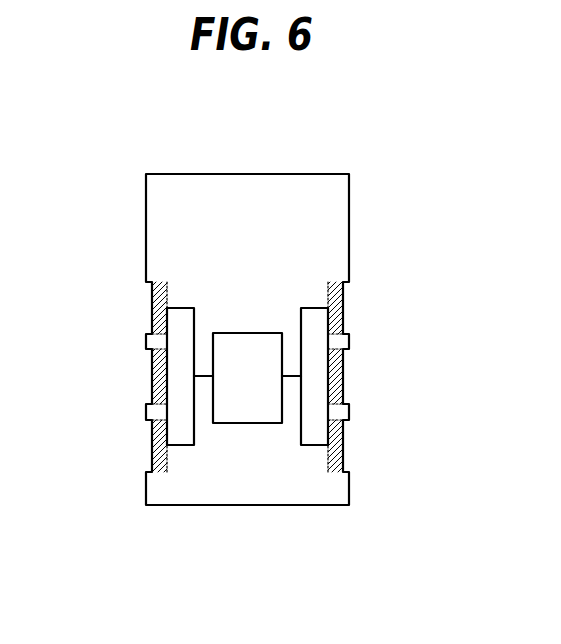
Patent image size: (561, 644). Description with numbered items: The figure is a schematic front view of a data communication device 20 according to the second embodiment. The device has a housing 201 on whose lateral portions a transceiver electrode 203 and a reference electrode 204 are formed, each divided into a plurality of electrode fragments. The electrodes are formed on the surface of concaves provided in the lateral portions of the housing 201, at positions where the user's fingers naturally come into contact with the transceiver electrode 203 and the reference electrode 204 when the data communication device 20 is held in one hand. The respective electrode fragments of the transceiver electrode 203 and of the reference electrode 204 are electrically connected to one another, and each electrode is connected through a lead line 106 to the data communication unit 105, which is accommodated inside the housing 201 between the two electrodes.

The data communication device 20 is at (334, 136).
The housing 201 is at (349, 225).
The transceiver electrode 203 is at (135, 273).
The reference electrode 204 is at (360, 272).
The data communication unit 105 is at (248, 333).
The lead line 106 is at (183, 445).